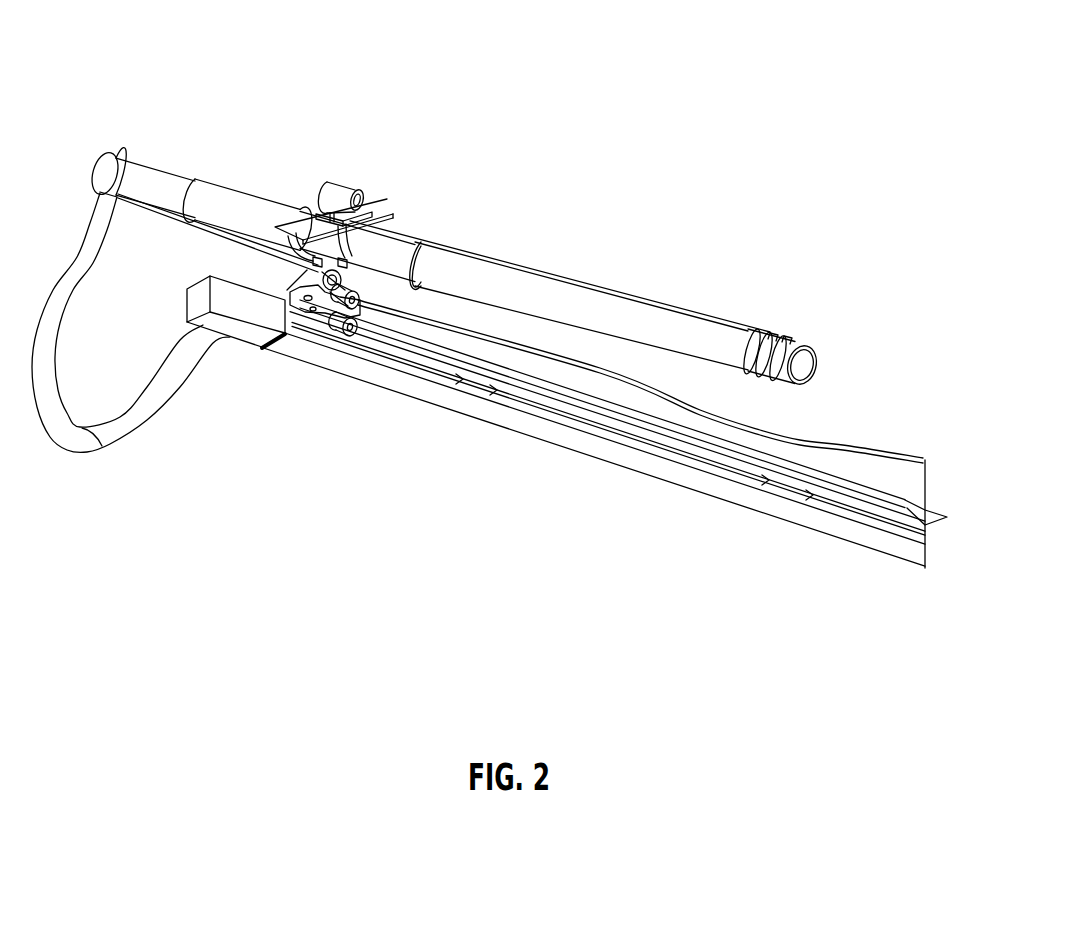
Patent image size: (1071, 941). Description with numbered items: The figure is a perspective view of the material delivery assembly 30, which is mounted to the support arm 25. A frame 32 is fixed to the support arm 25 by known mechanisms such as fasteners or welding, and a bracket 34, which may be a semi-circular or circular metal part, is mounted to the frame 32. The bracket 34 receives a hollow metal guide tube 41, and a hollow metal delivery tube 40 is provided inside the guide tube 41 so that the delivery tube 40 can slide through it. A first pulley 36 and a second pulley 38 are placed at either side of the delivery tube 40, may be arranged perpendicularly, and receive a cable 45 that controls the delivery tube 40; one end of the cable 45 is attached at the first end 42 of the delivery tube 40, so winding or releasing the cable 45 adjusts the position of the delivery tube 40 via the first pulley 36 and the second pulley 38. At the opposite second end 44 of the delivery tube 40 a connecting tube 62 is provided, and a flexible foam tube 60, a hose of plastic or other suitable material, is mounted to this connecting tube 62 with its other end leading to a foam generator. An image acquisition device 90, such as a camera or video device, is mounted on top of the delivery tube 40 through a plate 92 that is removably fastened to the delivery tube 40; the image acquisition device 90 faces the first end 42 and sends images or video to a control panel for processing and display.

The material delivery assembly 30 is at (599, 82).
The connecting tube 62 is at (110, 153).
The second end 44 is at (172, 173).
The guide tube 41 is at (233, 189).
The plate 92 is at (297, 222).
The image acquisition device 90 is at (340, 183).
The bracket 34 is at (368, 212).
The second pulley 38 is at (384, 228).
The delivery tube 40 is at (700, 347).
The first end 42 is at (742, 342).
The cable 45 is at (842, 488).
The support arm 25 is at (815, 520).
The frame 32 is at (267, 353).
The first pulley 36 is at (320, 327).
The foam tube 60 is at (122, 428).